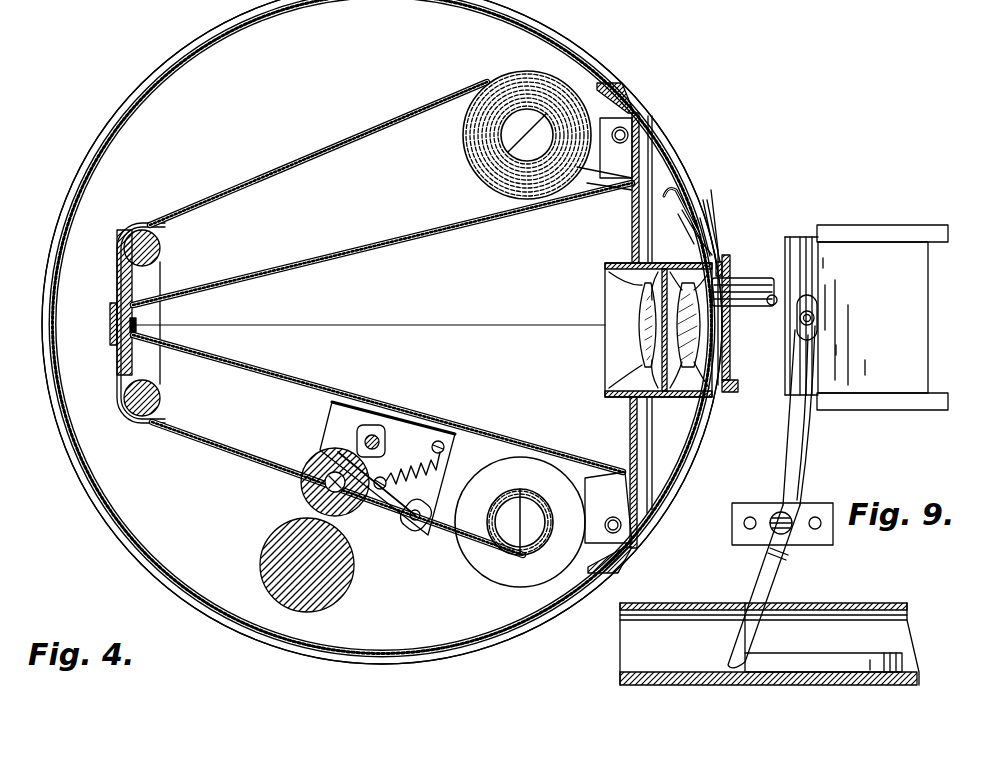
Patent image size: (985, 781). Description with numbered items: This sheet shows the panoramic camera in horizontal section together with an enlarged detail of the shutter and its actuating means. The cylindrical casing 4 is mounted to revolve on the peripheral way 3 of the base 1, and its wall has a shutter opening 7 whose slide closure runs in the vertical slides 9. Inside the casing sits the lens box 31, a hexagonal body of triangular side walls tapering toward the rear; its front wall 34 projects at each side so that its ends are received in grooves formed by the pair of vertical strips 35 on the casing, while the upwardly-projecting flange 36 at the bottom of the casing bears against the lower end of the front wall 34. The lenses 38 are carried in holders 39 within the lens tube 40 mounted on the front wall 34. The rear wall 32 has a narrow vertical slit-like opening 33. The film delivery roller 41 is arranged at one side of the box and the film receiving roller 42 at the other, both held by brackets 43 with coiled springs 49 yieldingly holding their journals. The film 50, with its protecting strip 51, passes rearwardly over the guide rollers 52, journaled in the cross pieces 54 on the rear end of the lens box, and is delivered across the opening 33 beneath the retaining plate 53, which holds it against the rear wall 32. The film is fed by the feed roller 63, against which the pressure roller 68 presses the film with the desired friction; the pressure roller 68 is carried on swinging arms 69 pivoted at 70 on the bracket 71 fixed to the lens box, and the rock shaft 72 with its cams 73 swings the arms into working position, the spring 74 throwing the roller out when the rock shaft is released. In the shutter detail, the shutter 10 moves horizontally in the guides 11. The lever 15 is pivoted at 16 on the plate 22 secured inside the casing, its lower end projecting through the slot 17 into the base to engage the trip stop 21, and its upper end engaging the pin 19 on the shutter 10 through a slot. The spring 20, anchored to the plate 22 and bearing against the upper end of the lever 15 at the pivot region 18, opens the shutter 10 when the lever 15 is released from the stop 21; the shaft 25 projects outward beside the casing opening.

In FIG. 4, the base 1 is at (508, 660).
In FIG. 9, the base 1 is at (624, 650).
In FIG. 9, the peripheral way 3 is at (622, 617).
In FIG. 4, the casing 4 is at (68, 447).
In FIG. 4, the shutter opening 7 is at (731, 330).
In FIG. 4, the vertical slides 9 is at (736, 383).
In FIG. 4, the shutter 10 is at (722, 250).
In FIG. 9, the shutter 10 is at (852, 252).
In FIG. 9, the horizontally-arranged guides 11 is at (900, 230).
In FIG. 4, the lever 15 is at (684, 232).
In FIG. 9, the lever 15 is at (758, 573).
In FIG. 4, the pivot 16 is at (682, 204).
In FIG. 9, the pivot 16 is at (778, 512).
In FIG. 4, the slot 17 is at (690, 250).
In FIG. 9, the slot 17 is at (785, 606).
In FIG. 9, the pivot bearing 18 is at (800, 333).
In FIG. 4, the pin 19 is at (722, 270).
In FIG. 9, the pin 19 is at (800, 322).
In FIG. 4, the spring 20 is at (710, 236).
In FIG. 9, the spring 20 is at (810, 452).
In FIG. 9, the trip stop 21 is at (778, 663).
In FIG. 9, the plate 22 is at (733, 527).
In FIG. 4, the shaft 25 is at (748, 282).
In FIG. 4, the lens box 31 is at (292, 263).
In FIG. 4, the rear wall 32 is at (118, 278).
In FIG. 4, the slit-like opening 33 is at (137, 326).
In FIG. 4, the front wall 34 is at (632, 213).
In FIG. 4, the vertical strips 35 is at (634, 96).
In FIG. 4, the upwardly-projecting flange 36 is at (640, 455).
In FIG. 4, the lenses 38 is at (642, 327).
In FIG. 4, the holders 39 is at (636, 384).
In FIG. 4, the lens tube 40 is at (628, 264).
In FIG. 4, the film delivery roller 41 is at (510, 146).
In FIG. 4, the film receiving roller 42 is at (510, 515).
In FIG. 4, the brackets 43 is at (601, 128).
In FIG. 4, the coiled springs 49 is at (628, 136).
In FIG. 4, the film 50 is at (318, 153).
In FIG. 4, the protecting strip 51 is at (330, 146).
In FIG. 4, the guide rollers 52 is at (160, 243).
In FIG. 4, the retaining plate 53 is at (111, 330).
In FIG. 4, the cross pieces 54 is at (161, 384).
In FIG. 4, the feed roller 63 is at (266, 564).
In FIG. 4, the pressure roller 68 is at (303, 482).
In FIG. 4, the swinging arms 69 is at (395, 500).
In FIG. 4, the pivot 70 is at (420, 518).
In FIG. 4, the bracket 71 is at (332, 422).
In FIG. 4, the rock shaft 72 is at (358, 442).
In FIG. 4, the cams 73 is at (380, 441).
In FIG. 4, the spring 74 is at (442, 458).